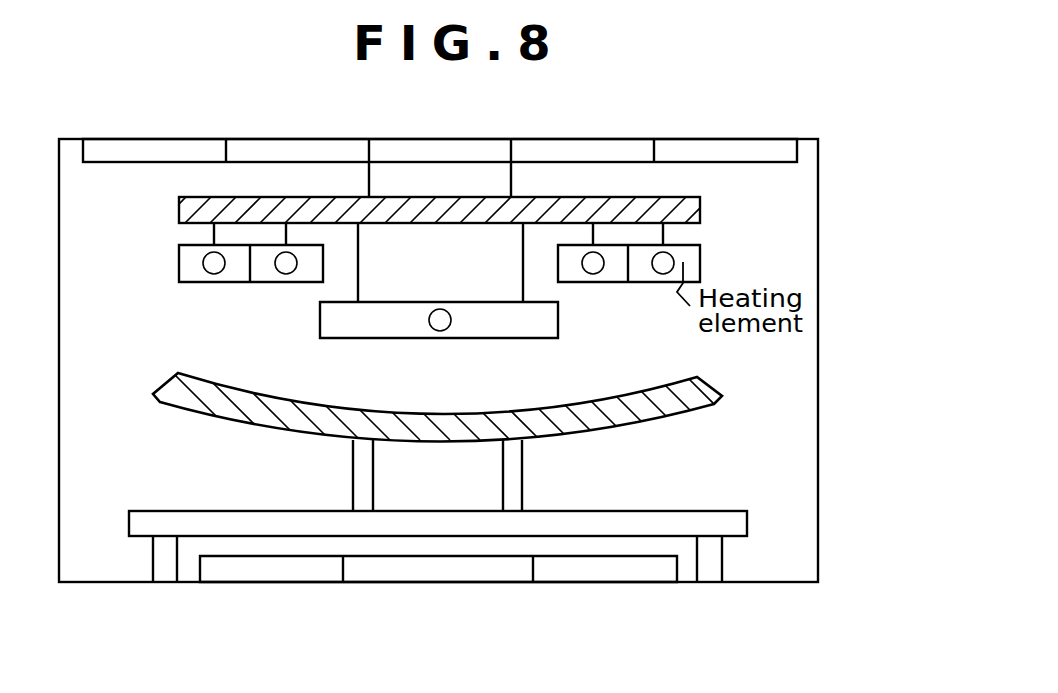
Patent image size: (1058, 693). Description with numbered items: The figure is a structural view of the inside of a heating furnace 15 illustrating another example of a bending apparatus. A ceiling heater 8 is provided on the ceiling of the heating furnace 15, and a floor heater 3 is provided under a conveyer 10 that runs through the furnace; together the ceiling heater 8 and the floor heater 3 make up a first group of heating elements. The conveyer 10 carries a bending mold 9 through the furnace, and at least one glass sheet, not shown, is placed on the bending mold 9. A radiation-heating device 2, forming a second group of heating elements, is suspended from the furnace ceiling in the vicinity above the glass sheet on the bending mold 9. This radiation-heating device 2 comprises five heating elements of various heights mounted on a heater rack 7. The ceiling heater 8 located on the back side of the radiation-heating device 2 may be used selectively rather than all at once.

The heating furnace 15 is at (440, 131).
The ceiling heater 8 is at (593, 152).
The heater rack 7 is at (579, 212).
The radiation-heating device 2 is at (727, 227).
The bending mold 9 is at (602, 420).
The conveyer 10 is at (625, 522).
The floor heater 3 is at (505, 568).